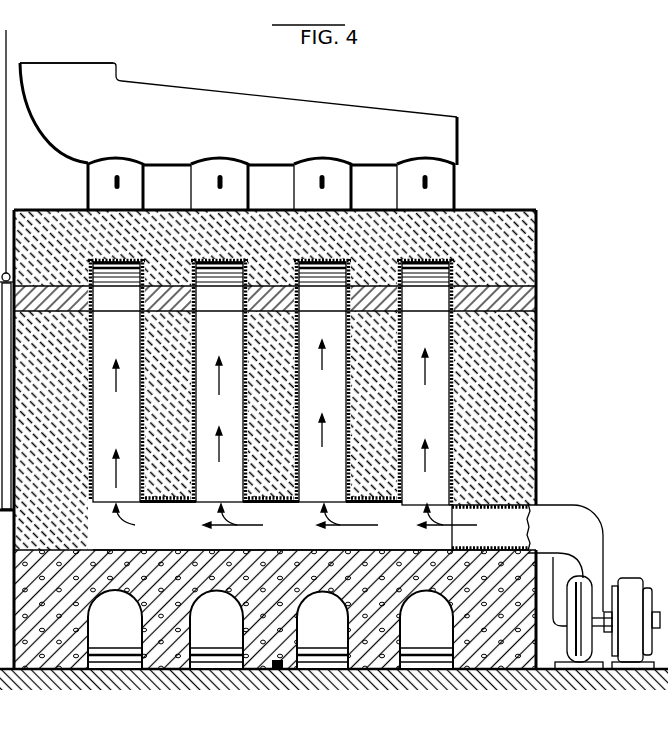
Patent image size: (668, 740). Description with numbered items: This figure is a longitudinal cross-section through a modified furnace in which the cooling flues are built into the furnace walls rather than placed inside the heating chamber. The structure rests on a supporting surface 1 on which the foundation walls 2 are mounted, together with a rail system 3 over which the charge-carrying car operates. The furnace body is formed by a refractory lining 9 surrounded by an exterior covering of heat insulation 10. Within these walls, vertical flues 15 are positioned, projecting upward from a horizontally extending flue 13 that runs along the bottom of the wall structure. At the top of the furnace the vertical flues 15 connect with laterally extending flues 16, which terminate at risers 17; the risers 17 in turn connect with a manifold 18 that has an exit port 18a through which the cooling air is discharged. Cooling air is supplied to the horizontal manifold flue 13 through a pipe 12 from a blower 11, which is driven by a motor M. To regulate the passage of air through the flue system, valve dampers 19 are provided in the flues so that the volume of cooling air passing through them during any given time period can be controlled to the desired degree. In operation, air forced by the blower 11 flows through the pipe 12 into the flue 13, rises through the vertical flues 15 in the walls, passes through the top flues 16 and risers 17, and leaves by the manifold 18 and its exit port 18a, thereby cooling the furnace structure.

The supporting surface 1 is at (289, 672).
The foundation walls 2 is at (185, 606).
The rail system 3 is at (107, 652).
The refractory lining 9 is at (383, 310).
The heat insulation 10 is at (296, 439).
The blower 11 is at (588, 580).
The pipe 12 is at (552, 515).
The horizontally extending flue 13 is at (247, 537).
The flues 15 is at (308, 403).
The laterally extending flues 16 is at (450, 262).
The risers 17 is at (443, 197).
The manifold 18 is at (332, 115).
The exit port 18a is at (78, 77).
The valve dampers 19 is at (120, 182).
The motor M is at (658, 565).